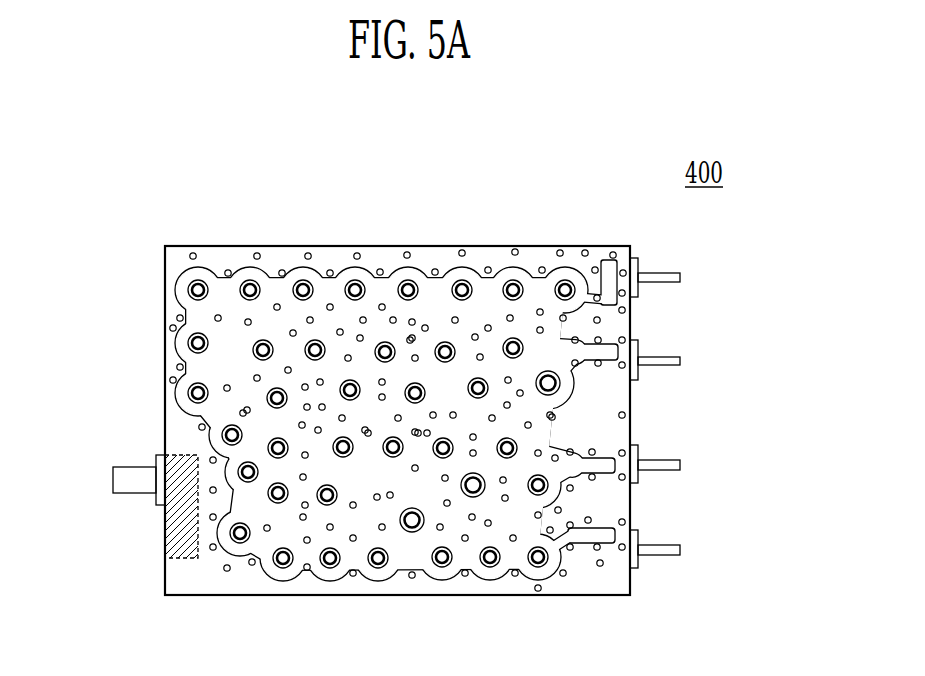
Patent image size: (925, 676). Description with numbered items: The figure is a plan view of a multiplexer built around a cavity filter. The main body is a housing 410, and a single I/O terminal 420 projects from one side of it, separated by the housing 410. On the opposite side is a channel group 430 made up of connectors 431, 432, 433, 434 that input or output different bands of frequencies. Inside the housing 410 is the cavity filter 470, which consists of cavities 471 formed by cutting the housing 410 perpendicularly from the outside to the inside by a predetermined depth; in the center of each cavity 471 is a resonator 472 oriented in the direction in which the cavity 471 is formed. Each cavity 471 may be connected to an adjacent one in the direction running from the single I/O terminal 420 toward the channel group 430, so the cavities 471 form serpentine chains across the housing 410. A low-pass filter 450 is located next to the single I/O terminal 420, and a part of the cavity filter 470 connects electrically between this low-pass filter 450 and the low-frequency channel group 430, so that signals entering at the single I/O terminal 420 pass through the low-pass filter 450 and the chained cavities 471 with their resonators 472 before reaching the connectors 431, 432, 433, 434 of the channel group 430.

The housing 410 is at (605, 580).
The single I/O terminal 420 is at (118, 480).
The channel group 430 is at (742, 413).
The first output connector 431 is at (680, 280).
The connector 432 is at (680, 363).
The connector 433 is at (680, 465).
The connector 434 is at (698, 524).
The low-pass filter 450 is at (180, 548).
The cavity filter 470 is at (396, 345).
The cavity 471 is at (497, 278).
The resonator 472 is at (565, 283).